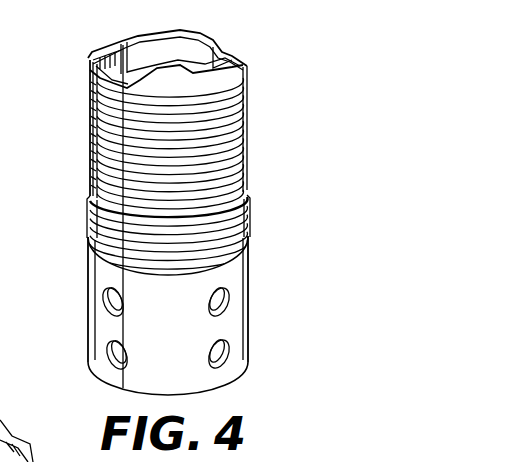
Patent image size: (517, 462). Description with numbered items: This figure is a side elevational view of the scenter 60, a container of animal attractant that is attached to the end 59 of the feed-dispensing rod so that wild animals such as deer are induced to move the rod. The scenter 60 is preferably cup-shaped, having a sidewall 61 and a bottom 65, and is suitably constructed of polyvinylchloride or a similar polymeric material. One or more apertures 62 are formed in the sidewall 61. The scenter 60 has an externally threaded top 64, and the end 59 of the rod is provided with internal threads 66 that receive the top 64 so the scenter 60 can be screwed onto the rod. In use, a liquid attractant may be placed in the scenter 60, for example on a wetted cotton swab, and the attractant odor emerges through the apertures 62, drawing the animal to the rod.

The other end of rod 59 is at (248, 137).
The scenter 60 is at (184, 217).
The sidewall 61 is at (89, 321).
The apertures 62 is at (228, 288).
The externally threaded top 64 is at (249, 202).
The bottom 65 is at (230, 383).
The internal threads 66 is at (92, 177).